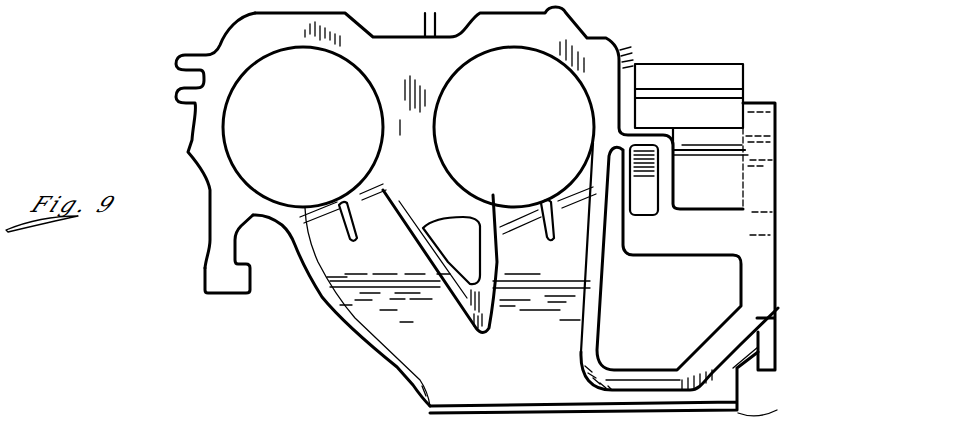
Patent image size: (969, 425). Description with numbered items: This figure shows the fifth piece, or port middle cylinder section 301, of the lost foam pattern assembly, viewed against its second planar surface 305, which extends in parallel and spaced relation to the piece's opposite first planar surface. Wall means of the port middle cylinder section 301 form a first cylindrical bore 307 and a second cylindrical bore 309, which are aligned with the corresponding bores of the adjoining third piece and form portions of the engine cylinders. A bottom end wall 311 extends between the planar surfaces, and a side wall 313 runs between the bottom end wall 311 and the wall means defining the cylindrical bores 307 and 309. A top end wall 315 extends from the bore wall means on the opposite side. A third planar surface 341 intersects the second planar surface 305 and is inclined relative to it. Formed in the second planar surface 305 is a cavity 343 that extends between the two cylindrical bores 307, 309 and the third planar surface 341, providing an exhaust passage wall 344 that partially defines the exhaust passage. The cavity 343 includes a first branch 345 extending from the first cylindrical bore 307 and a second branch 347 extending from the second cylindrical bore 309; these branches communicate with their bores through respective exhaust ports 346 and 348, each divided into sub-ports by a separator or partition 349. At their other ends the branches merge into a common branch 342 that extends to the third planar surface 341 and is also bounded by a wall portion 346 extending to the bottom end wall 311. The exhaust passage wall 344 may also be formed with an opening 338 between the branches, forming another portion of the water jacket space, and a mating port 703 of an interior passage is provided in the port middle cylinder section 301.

The port middle cylinder section 301 is at (670, 57).
The first cylindrical bore 307 is at (343, 60).
The second cylindrical bore 309 is at (565, 67).
The side wall 313 is at (707, 73).
The bottom end wall 311 is at (775, 152).
The mating port 703 is at (647, 188).
The top end wall 315 is at (205, 287).
The first branch 345 is at (320, 295).
The cavity 343 is at (378, 309).
The exhaust passage wall 344 is at (433, 330).
The common branch 342 is at (416, 393).
The second planar surface 305 is at (370, 340).
The second branch 347 is at (587, 287).
The exhaust port 346 is at (362, 190).
The exhaust port 348 is at (560, 193).
The separator or partition 349 is at (352, 237).
The opening 338 is at (442, 237).
The third planar surface 341 is at (774, 401).